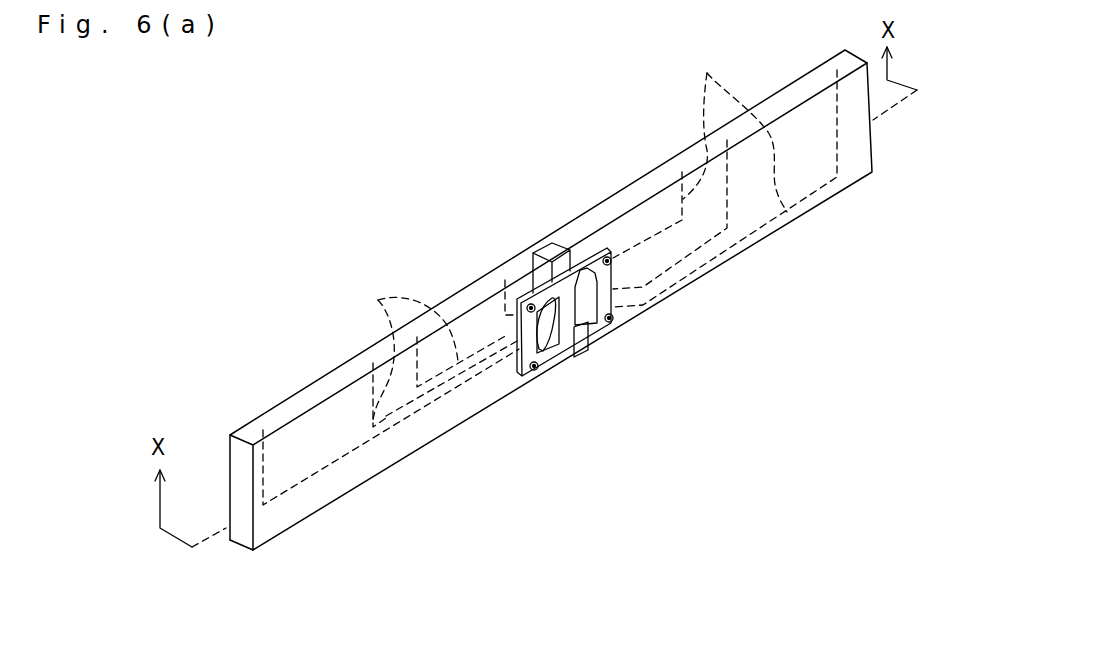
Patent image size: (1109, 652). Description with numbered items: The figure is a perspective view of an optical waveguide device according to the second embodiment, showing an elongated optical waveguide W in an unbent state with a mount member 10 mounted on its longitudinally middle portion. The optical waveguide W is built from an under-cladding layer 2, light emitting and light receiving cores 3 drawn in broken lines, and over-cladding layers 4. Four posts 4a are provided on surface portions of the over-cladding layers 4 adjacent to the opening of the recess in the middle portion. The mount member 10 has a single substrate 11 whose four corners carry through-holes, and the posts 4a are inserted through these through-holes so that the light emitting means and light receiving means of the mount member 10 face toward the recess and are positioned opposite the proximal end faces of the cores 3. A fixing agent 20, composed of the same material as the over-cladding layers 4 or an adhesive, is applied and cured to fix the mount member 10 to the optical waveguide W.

The under-cladding layer 2 is at (290, 396).
The cores 3 is at (550, 272).
The over-cladding layers 4 is at (300, 515).
The posts 4a is at (614, 319).
The mount member 10 is at (615, 353).
The substrate 11 is at (573, 337).
The fixing agent 20 is at (582, 258).
The optical waveguide W is at (632, 177).